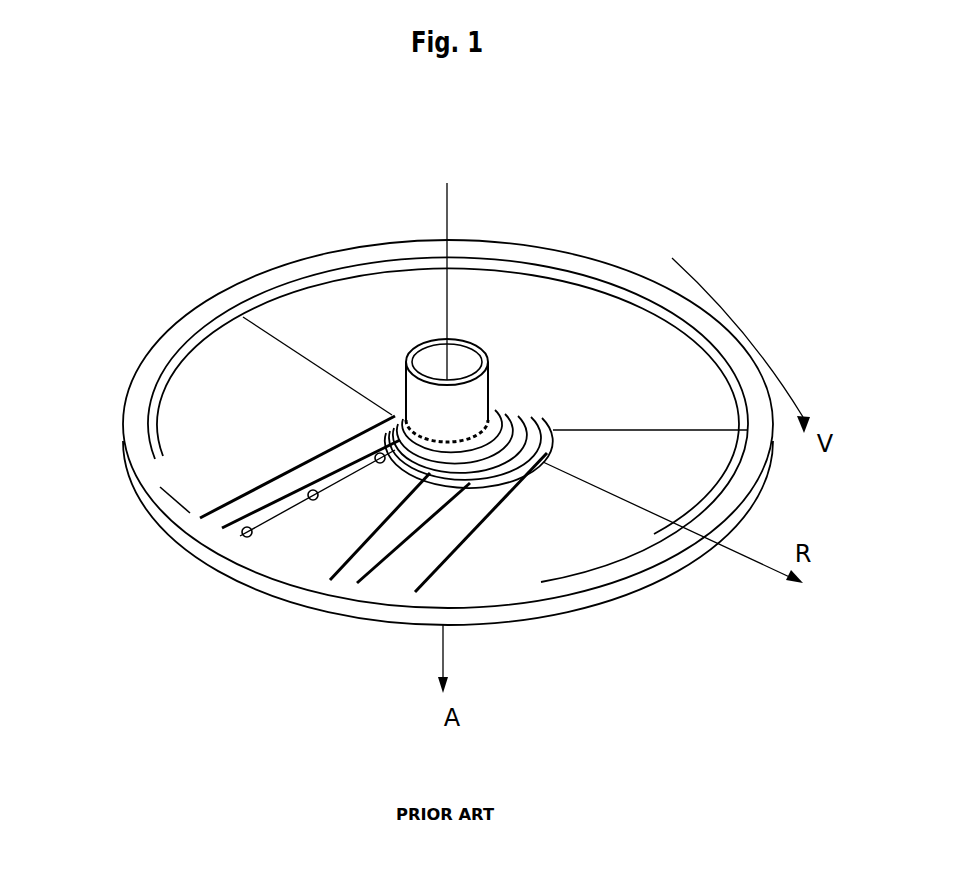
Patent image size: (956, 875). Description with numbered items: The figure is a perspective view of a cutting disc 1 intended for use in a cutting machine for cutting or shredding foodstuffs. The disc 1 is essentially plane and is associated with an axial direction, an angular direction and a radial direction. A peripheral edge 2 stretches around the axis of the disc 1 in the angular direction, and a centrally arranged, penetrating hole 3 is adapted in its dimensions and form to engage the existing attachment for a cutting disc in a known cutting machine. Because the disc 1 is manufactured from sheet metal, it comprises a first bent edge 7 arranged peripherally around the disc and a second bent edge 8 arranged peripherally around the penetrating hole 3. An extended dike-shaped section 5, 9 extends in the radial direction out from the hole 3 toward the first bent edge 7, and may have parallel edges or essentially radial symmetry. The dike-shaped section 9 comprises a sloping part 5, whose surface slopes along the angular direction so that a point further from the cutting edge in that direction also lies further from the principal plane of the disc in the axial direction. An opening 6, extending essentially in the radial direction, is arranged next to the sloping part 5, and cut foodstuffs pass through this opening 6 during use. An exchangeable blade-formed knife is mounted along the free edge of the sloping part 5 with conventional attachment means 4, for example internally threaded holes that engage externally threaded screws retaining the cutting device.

The cutting disc 1 is at (283, 180).
The peripheral edge 2 is at (193, 312).
The penetrating hole 3 is at (433, 352).
The attachment means 4 is at (375, 460).
The sloping part 5 is at (310, 540).
The opening 6 is at (317, 450).
The first bent edge 7 is at (540, 250).
The second bent edge 8 is at (523, 412).
The dike-shaped section 9 is at (467, 522).